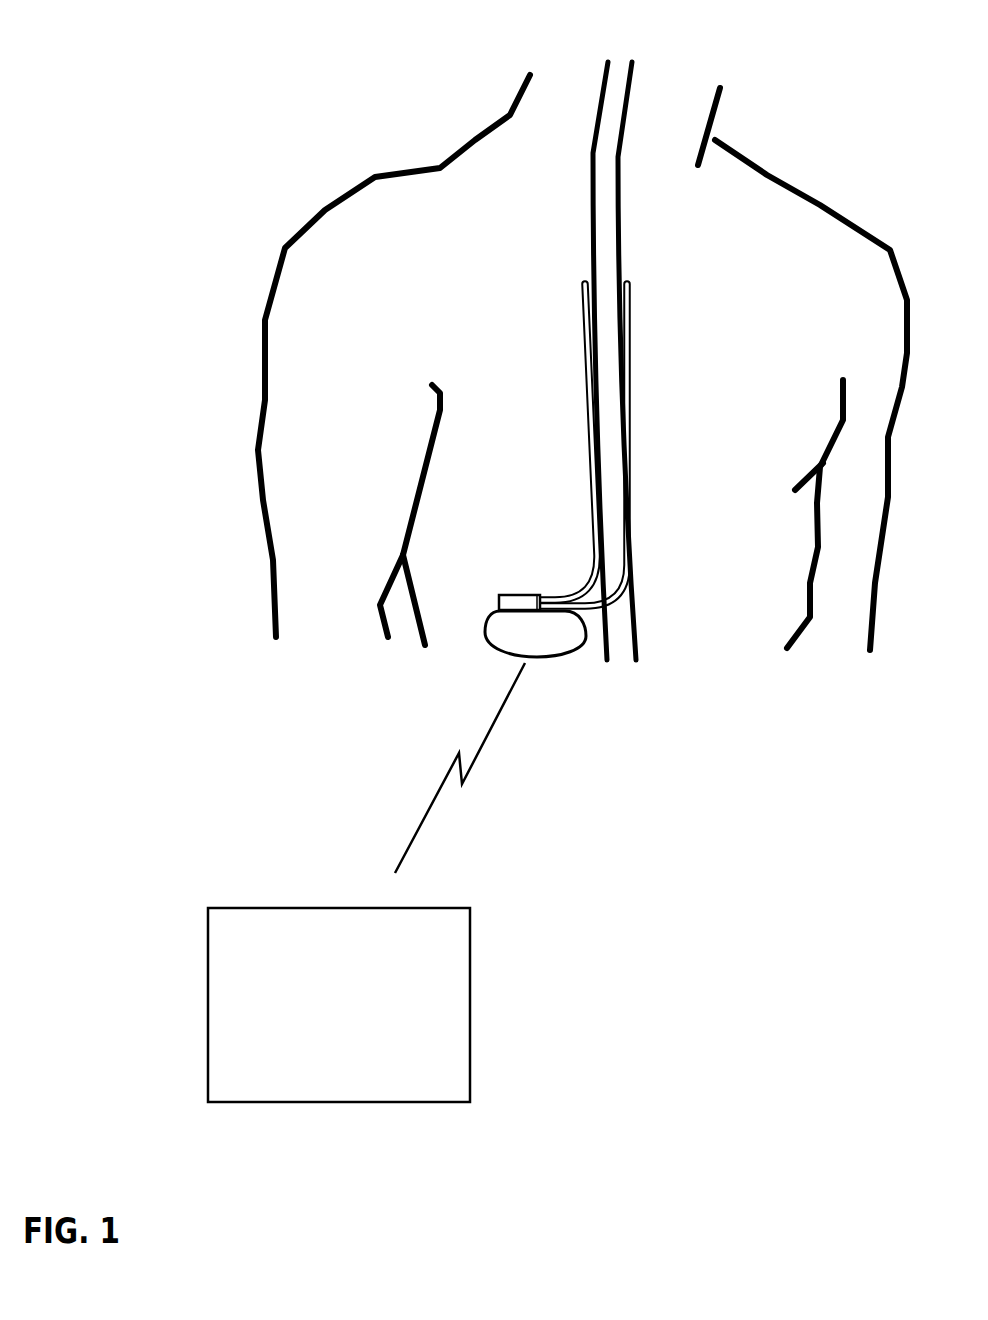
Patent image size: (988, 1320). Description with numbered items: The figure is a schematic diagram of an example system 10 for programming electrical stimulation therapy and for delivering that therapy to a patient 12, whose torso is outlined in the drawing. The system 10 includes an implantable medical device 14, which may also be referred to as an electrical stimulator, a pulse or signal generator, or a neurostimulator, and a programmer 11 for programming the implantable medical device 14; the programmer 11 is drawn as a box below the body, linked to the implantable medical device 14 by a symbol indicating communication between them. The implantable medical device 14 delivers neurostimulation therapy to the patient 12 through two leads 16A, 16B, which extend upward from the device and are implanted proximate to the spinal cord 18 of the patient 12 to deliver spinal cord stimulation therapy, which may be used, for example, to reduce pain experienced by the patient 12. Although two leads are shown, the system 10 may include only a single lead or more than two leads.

The system 10 is at (162, 98).
The programmer 11 is at (470, 1005).
The patient 12 is at (818, 182).
The implantable medical device 14 is at (483, 604).
The lead 16A is at (577, 410).
The lead 16B is at (646, 407).
The spinal cord 18 is at (632, 207).